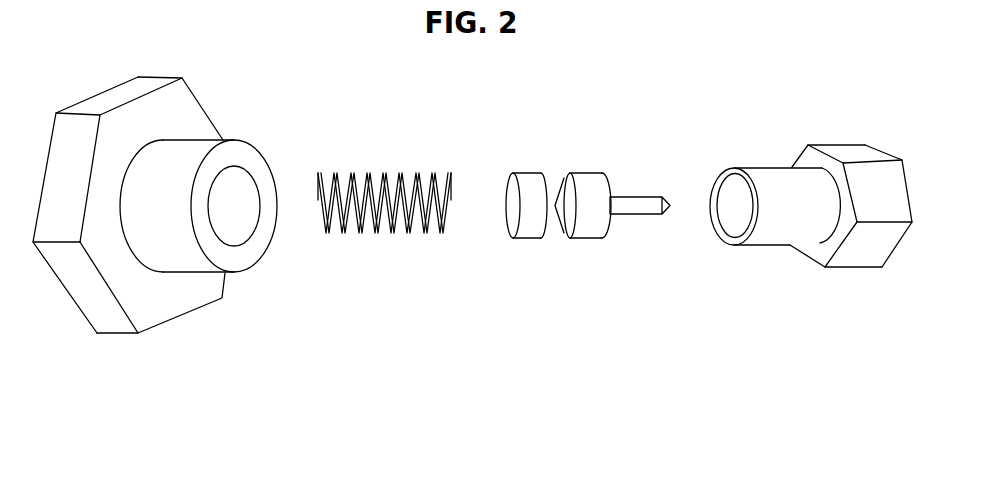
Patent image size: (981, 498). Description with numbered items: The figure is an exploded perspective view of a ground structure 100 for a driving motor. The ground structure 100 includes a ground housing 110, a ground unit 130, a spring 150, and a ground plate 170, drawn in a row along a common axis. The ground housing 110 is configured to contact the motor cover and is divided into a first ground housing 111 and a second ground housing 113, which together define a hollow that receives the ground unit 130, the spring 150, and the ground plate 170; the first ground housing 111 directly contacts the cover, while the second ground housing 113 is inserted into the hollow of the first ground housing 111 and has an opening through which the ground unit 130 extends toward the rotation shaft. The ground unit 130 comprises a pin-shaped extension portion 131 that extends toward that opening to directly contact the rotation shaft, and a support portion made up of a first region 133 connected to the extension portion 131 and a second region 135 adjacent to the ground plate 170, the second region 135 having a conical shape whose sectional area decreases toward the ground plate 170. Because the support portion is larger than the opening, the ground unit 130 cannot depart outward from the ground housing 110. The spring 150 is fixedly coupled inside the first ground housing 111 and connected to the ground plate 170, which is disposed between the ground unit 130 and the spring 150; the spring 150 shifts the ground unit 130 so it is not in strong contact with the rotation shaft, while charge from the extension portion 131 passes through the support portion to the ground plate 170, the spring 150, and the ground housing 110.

The ground structure 100 is at (733, 103).
The ground housing 110 is at (807, 402).
The first ground housing 111 is at (197, 298).
The second ground housing 113 is at (813, 258).
The ground unit 130 is at (596, 208).
The extension portion 131 is at (638, 215).
The first region of support portion 133 is at (587, 240).
The second region of support portion 135 is at (562, 217).
The spring 150 is at (400, 172).
The ground plate 170 is at (530, 178).